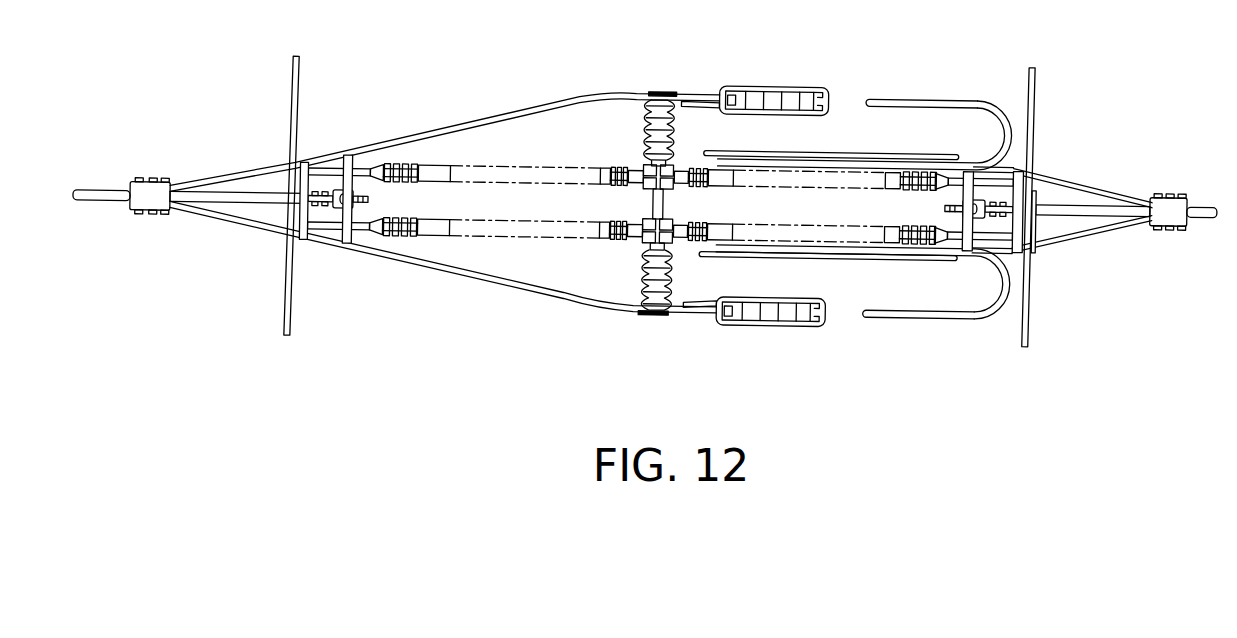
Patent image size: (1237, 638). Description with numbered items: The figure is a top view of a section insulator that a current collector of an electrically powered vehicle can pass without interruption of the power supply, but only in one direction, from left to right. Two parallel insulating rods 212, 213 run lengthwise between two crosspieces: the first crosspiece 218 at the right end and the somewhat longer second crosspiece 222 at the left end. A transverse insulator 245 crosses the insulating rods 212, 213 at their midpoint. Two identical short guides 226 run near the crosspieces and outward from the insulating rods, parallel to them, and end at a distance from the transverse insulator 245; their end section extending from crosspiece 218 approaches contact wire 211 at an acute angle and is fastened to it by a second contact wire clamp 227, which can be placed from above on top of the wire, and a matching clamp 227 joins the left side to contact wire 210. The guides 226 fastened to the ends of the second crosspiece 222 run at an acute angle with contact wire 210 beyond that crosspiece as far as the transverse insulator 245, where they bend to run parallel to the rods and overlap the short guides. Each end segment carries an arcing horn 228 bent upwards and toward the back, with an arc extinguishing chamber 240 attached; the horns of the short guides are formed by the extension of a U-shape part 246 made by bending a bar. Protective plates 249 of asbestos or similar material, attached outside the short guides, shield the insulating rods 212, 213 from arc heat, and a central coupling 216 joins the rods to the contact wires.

The contact wire 210 is at (125, 199).
The contact wire 211 is at (1209, 206).
The insulating rod 212 is at (527, 160).
The insulating rod 213 is at (543, 243).
The shaft coupling 216 is at (320, 224).
The crosspiece 218 is at (300, 182).
The second crosspiece 222 is at (346, 155).
The guide 226 is at (468, 123).
The second contact wire clamp 227 is at (150, 185).
The arcing horn 228 is at (899, 101).
The arc extinguishing chamber 240 is at (771, 86).
The transverse insulator 245 is at (655, 131).
The U-shape part 246 is at (1010, 131).
The protective plate 249 is at (813, 155).